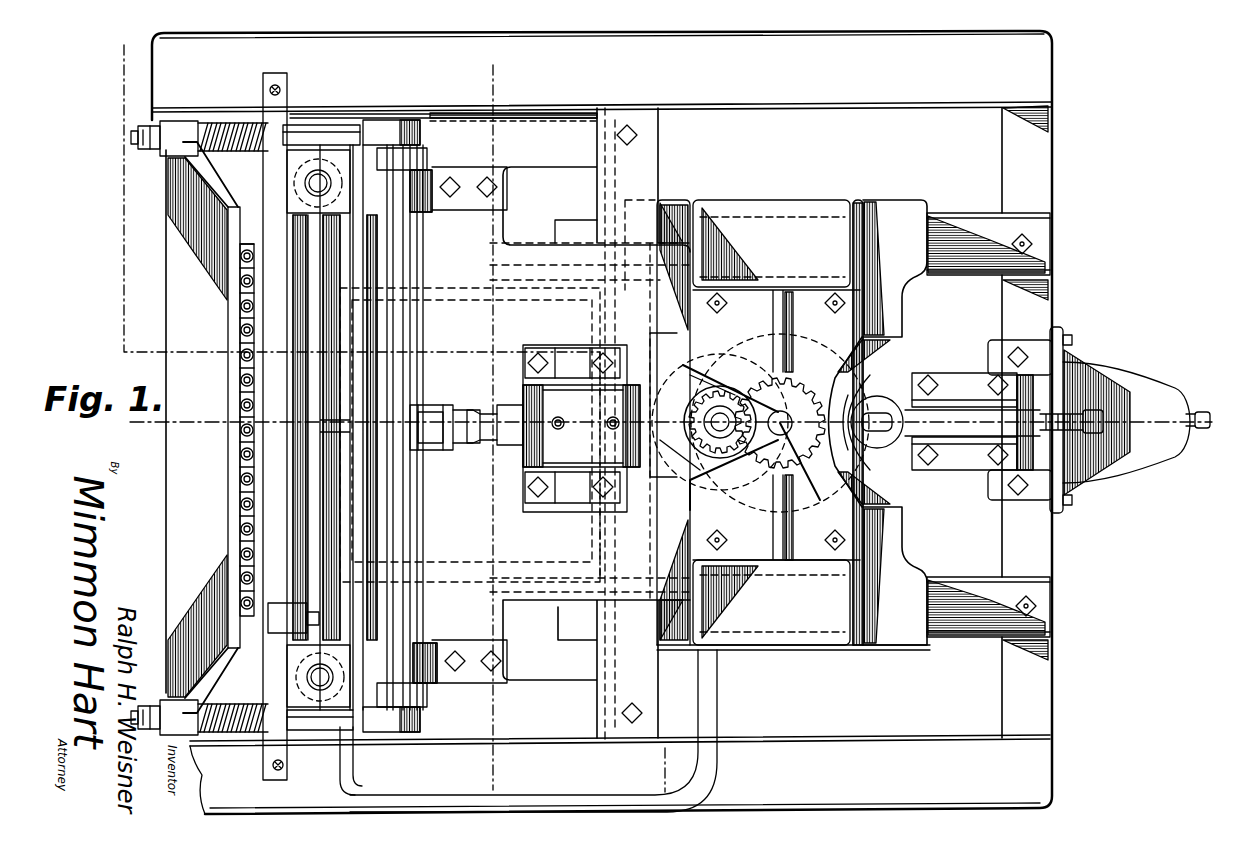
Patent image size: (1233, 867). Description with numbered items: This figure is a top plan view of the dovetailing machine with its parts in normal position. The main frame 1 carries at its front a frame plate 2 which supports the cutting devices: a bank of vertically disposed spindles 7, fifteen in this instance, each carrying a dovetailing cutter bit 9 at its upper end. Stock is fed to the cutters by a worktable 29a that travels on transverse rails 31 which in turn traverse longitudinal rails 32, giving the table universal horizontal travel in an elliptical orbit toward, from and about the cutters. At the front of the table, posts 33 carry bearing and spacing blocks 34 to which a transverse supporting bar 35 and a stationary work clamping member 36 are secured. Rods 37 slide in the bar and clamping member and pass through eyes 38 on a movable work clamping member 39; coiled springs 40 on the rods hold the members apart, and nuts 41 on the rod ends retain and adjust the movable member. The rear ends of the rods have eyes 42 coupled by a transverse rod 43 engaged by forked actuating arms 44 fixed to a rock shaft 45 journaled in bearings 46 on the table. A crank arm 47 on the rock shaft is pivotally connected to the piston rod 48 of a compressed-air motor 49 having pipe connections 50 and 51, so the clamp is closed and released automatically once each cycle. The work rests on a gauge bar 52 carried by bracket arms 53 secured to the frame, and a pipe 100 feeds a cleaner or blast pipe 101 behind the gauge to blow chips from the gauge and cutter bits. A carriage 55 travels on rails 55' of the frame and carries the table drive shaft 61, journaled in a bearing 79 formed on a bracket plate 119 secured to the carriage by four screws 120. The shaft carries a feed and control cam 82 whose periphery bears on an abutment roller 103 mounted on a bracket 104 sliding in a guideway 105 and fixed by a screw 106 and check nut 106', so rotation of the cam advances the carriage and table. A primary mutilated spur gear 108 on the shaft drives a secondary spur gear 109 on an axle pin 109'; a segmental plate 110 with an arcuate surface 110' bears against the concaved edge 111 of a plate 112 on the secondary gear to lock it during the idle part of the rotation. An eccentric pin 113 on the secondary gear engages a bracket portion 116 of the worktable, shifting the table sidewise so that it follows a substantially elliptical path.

The main frame 1 is at (1055, 771).
The frame plate 2 is at (132, 66).
The spindles 7 is at (486, 76).
The cutter bits 9 is at (240, 282).
The worktable 29a is at (470, 435).
The transverse rails 31 is at (645, 185).
The longitudinal rails 32 is at (515, 316).
The posts 33 is at (310, 175).
The bearing and spacing blocks 34 is at (290, 175).
The transverse supporting bar 35 is at (357, 500).
The stationary work clamping member 36 is at (278, 450).
The rods 37 is at (325, 130).
The eyes 38 is at (172, 121).
The movable work clamping member 39 is at (226, 398).
The coiled springs 40 is at (233, 125).
The nuts 41 is at (140, 143).
The eyes 42 is at (418, 135).
The transverse rod 43 is at (405, 328).
The actuating arms 44 is at (425, 155).
The rock shaft 45 is at (420, 357).
The bearings 46 is at (425, 200).
The crank arm 47 is at (425, 405).
The piston rod 48 is at (476, 443).
The motor 49 is at (560, 395).
The pipe connection 50 is at (555, 422).
The pipe connection 51 is at (630, 450).
The gauge bar 52 is at (280, 118).
The bracket arms 53 is at (256, 779).
The carriage 55 is at (887, 422).
The rails 55' is at (988, 428).
The table drive shaft 61 is at (776, 386).
The bearing 79 is at (878, 398).
The feed and control cam 82 is at (808, 348).
The pipe 100 is at (718, 708).
The cleaner or blast pipe 101 is at (355, 773).
The abutment roller 103 is at (905, 395).
The bracket 104 is at (940, 395).
The guideway 105 is at (915, 470).
The screw 106 is at (1125, 404).
The check nut 106' is at (1120, 420).
The primary mutilated spur gear 108 is at (855, 450).
The secondary spur gear 109 is at (775, 500).
The axle pin 109' is at (695, 385).
The segmental plate 110 is at (812, 491).
The arcuate surface 110' is at (757, 507).
The concaved edge 111 is at (776, 331).
The plate 112 is at (730, 373).
The eccentric pin 113 is at (679, 459).
The bracket portion 116 is at (750, 470).
The bracket plate 119 is at (795, 290).
The screws 120 is at (775, 312).